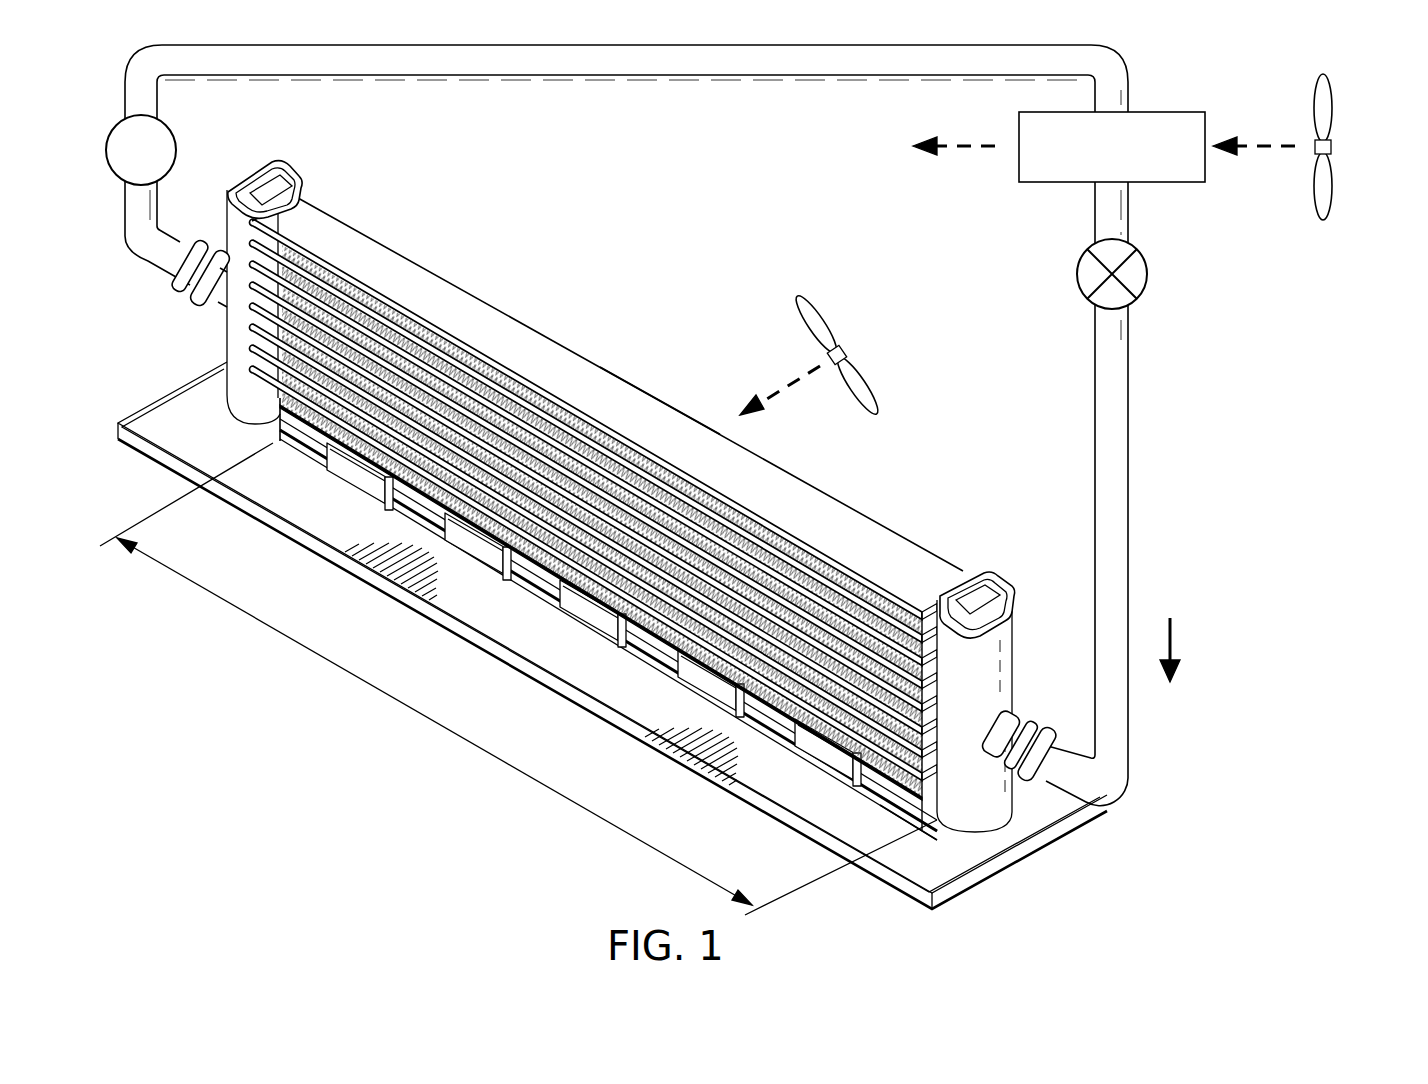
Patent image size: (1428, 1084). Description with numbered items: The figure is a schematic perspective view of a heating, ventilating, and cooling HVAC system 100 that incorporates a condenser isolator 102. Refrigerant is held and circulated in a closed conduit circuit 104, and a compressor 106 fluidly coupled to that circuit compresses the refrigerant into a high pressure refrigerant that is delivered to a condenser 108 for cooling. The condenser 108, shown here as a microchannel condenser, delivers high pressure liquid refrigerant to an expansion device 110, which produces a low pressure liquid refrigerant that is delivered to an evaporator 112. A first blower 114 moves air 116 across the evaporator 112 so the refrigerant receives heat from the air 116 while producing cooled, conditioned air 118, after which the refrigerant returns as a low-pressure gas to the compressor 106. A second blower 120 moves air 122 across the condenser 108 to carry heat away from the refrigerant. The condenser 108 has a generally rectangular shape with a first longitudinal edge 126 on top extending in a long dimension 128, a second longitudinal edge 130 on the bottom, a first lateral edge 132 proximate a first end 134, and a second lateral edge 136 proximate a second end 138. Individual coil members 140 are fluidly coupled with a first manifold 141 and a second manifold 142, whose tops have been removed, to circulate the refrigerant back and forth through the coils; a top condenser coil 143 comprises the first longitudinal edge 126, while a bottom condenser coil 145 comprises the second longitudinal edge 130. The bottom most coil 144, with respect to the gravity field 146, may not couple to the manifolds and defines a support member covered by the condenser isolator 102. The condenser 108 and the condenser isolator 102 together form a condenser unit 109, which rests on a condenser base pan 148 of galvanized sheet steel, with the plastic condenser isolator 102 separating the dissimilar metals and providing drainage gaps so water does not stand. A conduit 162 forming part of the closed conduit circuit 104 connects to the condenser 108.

The HVAC system 100 is at (410, 822).
The condenser isolator 102 is at (545, 525).
The closed conduit circuit 104 is at (124, 205).
The compressor 106 is at (106, 150).
The condenser 108 is at (607, 508).
The condenser unit 109 is at (466, 566).
The expansion device 110 is at (1147, 272).
The evaporator 112 is at (1163, 112).
The first blower 114 is at (1333, 113).
The air 116 is at (1265, 142).
The cooled, conditioned air 118 is at (968, 142).
The second blower 120 is at (850, 372).
The air 122 is at (788, 380).
The first longitudinal edge 126 is at (820, 491).
The long dimension 128 is at (436, 722).
The second longitudinal edge 130 is at (883, 787).
The first lateral edge 132 is at (272, 438).
The first end 134 is at (250, 362).
The second lateral edge 136 is at (933, 807).
The second end 138 is at (938, 770).
The coil members 140 is at (500, 325).
The first manifold 141 is at (268, 185).
The second manifold 142 is at (980, 590).
The top condenser coil 143 is at (652, 398).
The bottom most coil 144 is at (545, 572).
The bottom condenser coil 145 is at (662, 642).
The gravity field 146 is at (1205, 650).
The condenser base pan 148 is at (1044, 843).
The conduit 162 is at (1092, 768).